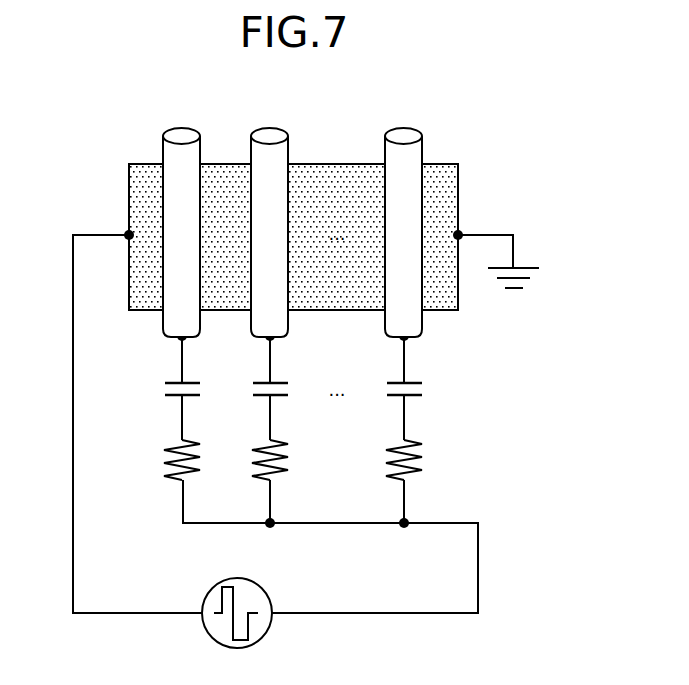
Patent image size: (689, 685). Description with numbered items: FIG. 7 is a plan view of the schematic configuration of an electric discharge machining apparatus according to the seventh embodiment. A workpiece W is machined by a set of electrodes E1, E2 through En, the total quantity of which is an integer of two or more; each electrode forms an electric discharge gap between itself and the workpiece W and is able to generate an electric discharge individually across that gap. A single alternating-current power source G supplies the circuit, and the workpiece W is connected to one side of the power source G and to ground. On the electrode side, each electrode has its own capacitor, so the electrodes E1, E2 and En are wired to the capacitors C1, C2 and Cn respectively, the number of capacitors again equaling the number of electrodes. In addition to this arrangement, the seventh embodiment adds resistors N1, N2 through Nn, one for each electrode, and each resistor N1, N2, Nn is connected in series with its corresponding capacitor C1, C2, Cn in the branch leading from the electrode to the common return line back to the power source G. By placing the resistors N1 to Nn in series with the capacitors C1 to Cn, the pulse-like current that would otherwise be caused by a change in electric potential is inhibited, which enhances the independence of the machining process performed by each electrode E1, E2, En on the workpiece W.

The workpiece W is at (129, 182).
The electrode E1 is at (182, 127).
The electrode E2 is at (270, 127).
The electrode En is at (404, 127).
The capacitor C1 is at (193, 382).
The capacitor C2 is at (281, 382).
The capacitor Cn is at (415, 382).
The resistor N1 is at (200, 441).
The resistor N2 is at (288, 441).
The resistor Nn is at (422, 441).
The alternating-current power source G is at (258, 585).